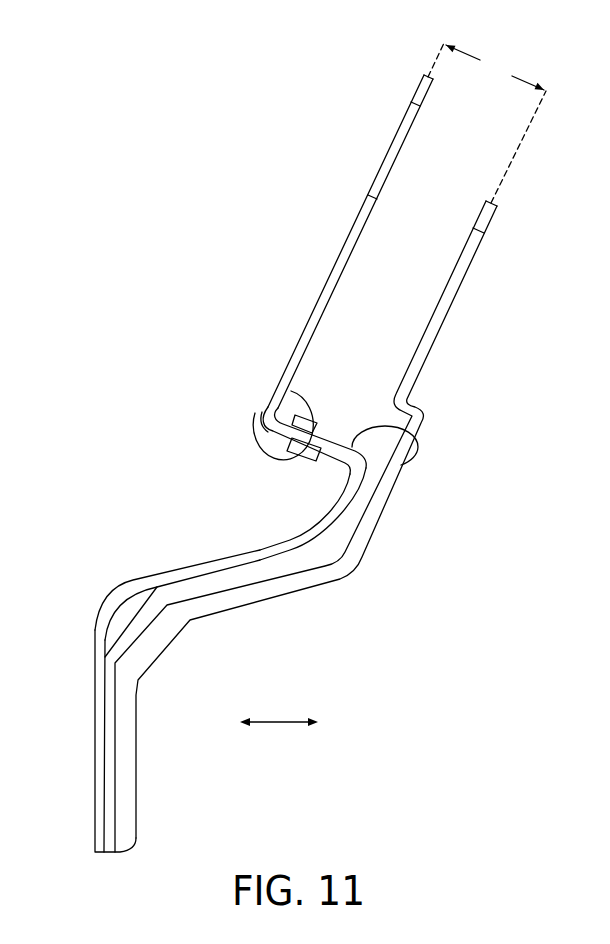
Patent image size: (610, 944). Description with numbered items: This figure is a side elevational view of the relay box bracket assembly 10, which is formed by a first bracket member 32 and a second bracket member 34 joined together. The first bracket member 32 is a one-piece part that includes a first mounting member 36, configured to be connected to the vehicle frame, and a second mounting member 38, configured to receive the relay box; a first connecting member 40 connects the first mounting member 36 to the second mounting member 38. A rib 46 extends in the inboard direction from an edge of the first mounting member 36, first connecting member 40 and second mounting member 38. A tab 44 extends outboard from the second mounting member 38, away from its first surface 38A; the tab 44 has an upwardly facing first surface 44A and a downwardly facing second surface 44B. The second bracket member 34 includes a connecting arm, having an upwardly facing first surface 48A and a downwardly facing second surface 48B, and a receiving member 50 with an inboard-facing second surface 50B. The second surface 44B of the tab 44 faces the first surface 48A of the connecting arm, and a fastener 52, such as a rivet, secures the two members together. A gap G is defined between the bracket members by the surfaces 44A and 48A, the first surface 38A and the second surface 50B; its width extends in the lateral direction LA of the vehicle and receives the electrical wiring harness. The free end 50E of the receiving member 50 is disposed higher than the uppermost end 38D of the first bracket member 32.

The relay box bracket assembly 10 is at (306, 158).
The first bracket member 32 is at (433, 366).
The second bracket member 34 is at (305, 308).
The first mounting member 36 is at (95, 763).
The second mounting member 38 is at (458, 293).
The first surface 38A is at (465, 252).
The uppermost end 38D is at (500, 199).
The first connecting member 40 is at (213, 557).
The tab 44 is at (270, 410).
The first surface 44A is at (415, 440).
The second surface 44B is at (345, 462).
The rib 46 is at (275, 597).
The first surface 48A is at (283, 376).
The second surface 48B is at (278, 442).
The receiving member 50 is at (349, 236).
The second surface 50B is at (369, 218).
The upper or free end 50E is at (430, 73).
The fastener 52 is at (330, 425).
The gap G is at (495, 67).
The lateral direction LA is at (278, 725).